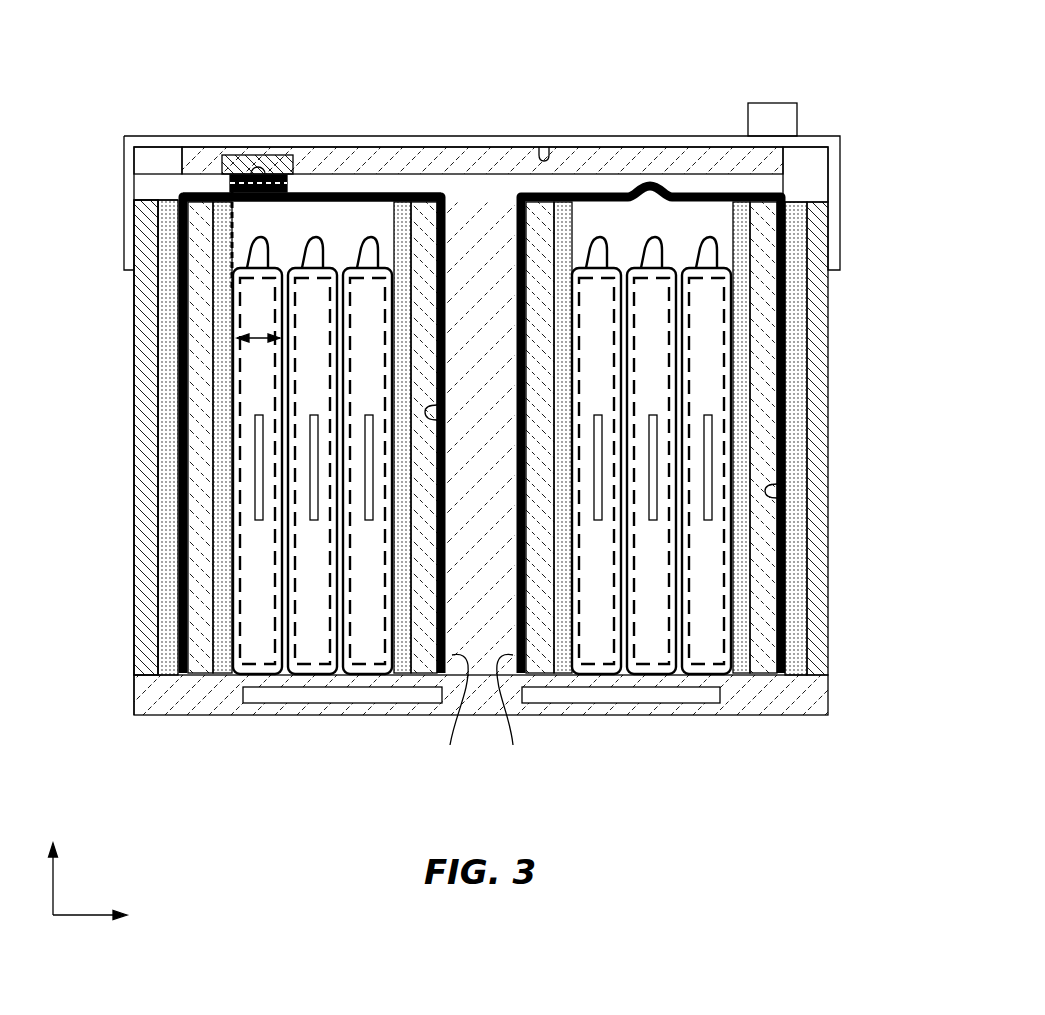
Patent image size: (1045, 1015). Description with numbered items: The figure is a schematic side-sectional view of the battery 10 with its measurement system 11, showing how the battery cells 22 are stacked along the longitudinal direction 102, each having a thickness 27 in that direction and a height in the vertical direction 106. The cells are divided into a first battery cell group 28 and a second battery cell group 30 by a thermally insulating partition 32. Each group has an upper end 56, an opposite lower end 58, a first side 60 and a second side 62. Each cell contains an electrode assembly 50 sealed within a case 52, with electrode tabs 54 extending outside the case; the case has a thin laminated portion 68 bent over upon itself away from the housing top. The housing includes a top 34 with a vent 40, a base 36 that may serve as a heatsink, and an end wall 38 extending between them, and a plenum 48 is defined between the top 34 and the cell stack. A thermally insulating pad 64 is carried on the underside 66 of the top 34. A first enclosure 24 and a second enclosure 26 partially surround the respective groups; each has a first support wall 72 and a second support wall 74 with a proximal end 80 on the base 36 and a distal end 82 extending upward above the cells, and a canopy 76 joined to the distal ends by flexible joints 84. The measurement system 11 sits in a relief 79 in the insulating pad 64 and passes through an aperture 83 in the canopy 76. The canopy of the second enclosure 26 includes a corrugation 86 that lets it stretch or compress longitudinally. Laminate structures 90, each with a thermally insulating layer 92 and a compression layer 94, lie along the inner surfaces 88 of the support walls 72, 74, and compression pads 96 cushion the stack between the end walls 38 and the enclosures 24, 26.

The battery 10 is at (188, 118).
The measurement system 11 is at (258, 154).
The battery cells 22 is at (380, 262).
The first enclosure 24 is at (428, 215).
The second enclosure 26 is at (700, 193).
The thickness 27 is at (258, 338).
The first battery cell group 28 is at (257, 690).
The second battery cell group 30 is at (660, 690).
The partition 32 is at (486, 232).
The top 34 is at (840, 215).
The base 36 is at (815, 716).
The end wall 38 is at (143, 527).
The vent 40 is at (797, 116).
The plenum 48 is at (160, 167).
The electrode assembly 50 is at (300, 676).
The case 52 is at (676, 608).
The electrode tabs 54 is at (255, 470).
The upper end 56 is at (332, 245).
The lower end 58 is at (360, 688).
The first side 60 is at (225, 425).
The second side 62 is at (405, 565).
The thermally insulating pad 64 is at (783, 160).
The underside 66 is at (542, 147).
The laminated portion 68 is at (293, 155).
The first support wall 72 is at (190, 576).
The second support wall 74 is at (765, 562).
The canopy 76 is at (312, 237).
The relief 79 is at (245, 172).
The proximal end 80 is at (172, 657).
The distal end 82 is at (170, 220).
The aperture 83 is at (215, 181).
The flexible joints 84 is at (178, 200).
The corrugation 86 is at (651, 186).
The inner surfaces 88 is at (440, 416).
The laminate structures 90 is at (198, 690).
The thermally insulating layer 92 is at (762, 700).
The compression layer 94 is at (718, 690).
The compression pads 96 is at (152, 378).
The longitudinal direction 102 is at (116, 913).
The vertical direction 106 is at (55, 863).